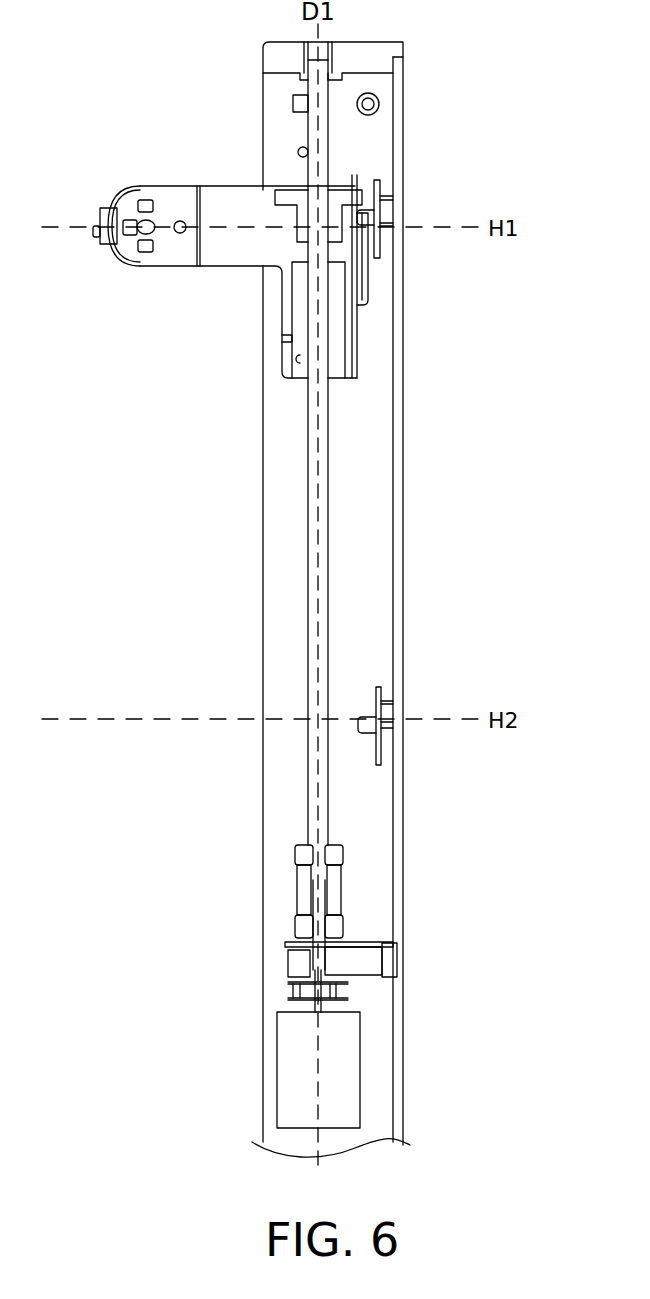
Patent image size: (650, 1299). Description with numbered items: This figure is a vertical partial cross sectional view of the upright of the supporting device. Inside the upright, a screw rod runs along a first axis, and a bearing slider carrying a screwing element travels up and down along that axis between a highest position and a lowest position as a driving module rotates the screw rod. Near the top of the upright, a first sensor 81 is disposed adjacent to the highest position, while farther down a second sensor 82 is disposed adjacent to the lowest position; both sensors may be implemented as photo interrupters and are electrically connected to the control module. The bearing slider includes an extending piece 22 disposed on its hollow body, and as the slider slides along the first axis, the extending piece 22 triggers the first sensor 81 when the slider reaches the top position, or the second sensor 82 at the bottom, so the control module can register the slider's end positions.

The extending piece 22 is at (360, 288).
The first sensor 81 is at (383, 200).
The second sensor 82 is at (387, 710).